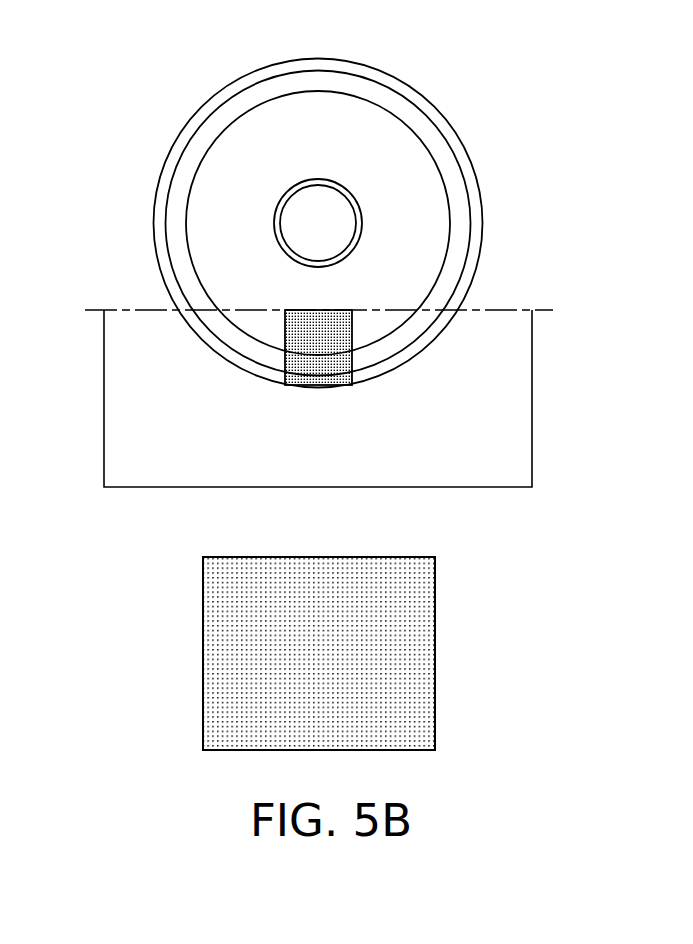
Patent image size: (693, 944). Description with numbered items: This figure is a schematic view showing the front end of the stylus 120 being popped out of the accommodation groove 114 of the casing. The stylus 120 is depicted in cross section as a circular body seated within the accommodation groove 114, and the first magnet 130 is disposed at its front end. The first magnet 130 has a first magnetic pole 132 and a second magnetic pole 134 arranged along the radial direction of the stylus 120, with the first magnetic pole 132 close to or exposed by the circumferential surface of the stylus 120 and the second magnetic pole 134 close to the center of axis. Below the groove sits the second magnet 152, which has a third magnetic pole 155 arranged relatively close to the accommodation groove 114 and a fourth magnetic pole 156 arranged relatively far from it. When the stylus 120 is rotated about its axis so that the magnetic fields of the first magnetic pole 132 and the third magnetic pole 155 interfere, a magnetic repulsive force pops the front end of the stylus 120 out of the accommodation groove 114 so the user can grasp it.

The accommodation groove 114 is at (104, 392).
The stylus 120 is at (420, 197).
The first magnet 130 is at (482, 358).
The first magnetic pole 132 is at (327, 327).
The second magnetic pole 134 is at (328, 371).
The second magnet 152 is at (441, 655).
The third magnetic pole 155 is at (340, 543).
The fourth magnetic pole 156 is at (337, 764).